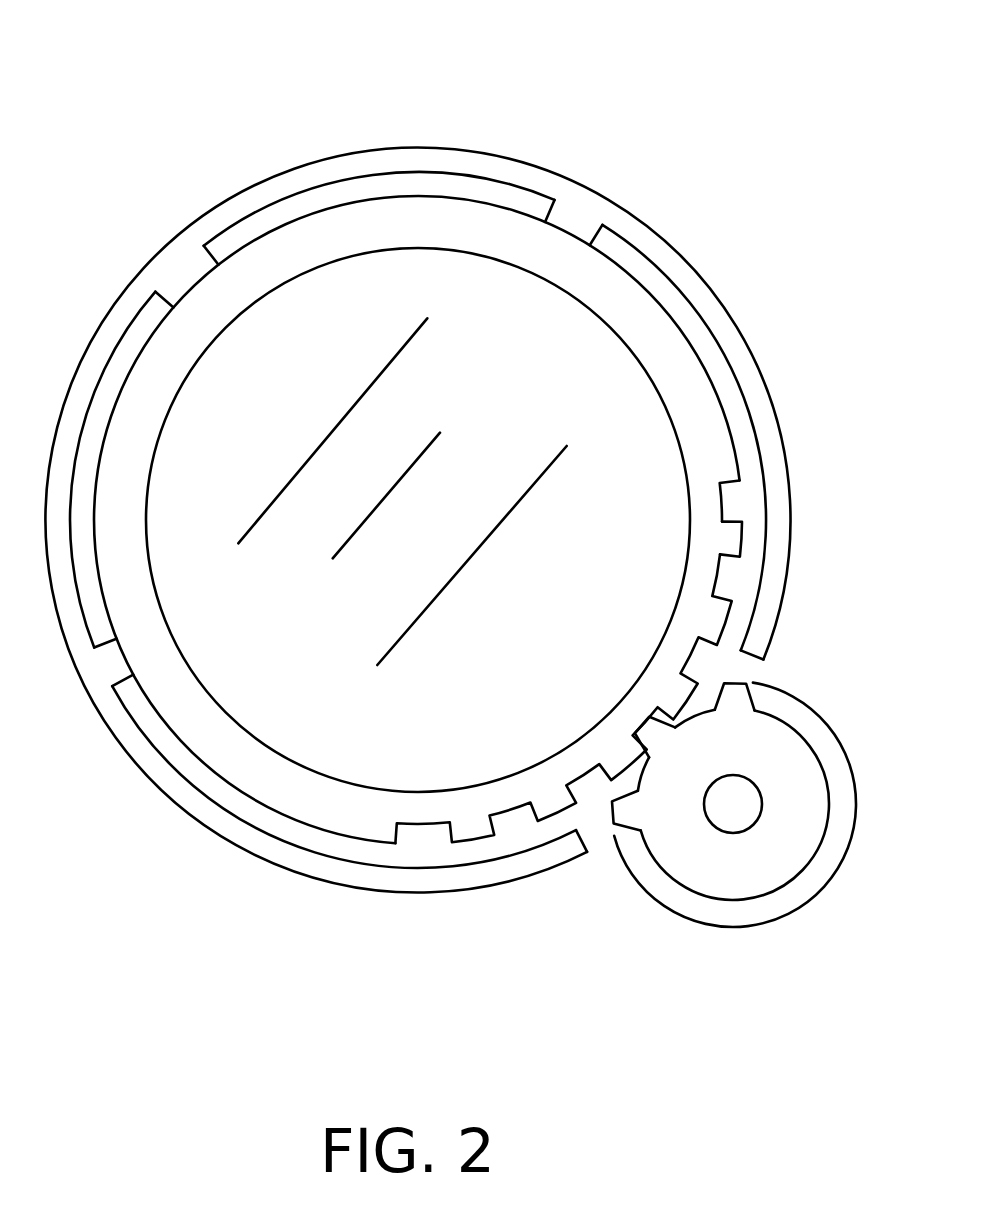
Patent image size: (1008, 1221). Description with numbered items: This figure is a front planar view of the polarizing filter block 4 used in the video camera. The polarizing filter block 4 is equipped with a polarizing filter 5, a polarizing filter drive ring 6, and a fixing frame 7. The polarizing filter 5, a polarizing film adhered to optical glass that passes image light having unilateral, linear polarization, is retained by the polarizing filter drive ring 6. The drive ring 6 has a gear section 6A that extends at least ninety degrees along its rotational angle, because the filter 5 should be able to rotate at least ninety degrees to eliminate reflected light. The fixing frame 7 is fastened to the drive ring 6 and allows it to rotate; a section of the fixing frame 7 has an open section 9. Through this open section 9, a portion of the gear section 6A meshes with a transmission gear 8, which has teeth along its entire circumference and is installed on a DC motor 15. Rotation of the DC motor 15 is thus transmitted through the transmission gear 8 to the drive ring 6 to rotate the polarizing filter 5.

The polarizing filter block 4 is at (288, 70).
The polarizing filter 5 is at (573, 415).
The polarizing filter drive ring 6 is at (612, 295).
The gear section 6A is at (743, 538).
The fixing frame 7 is at (572, 218).
The transmission gear 8 is at (783, 777).
The open section 9 is at (737, 663).
The DC motor 15 is at (752, 825).